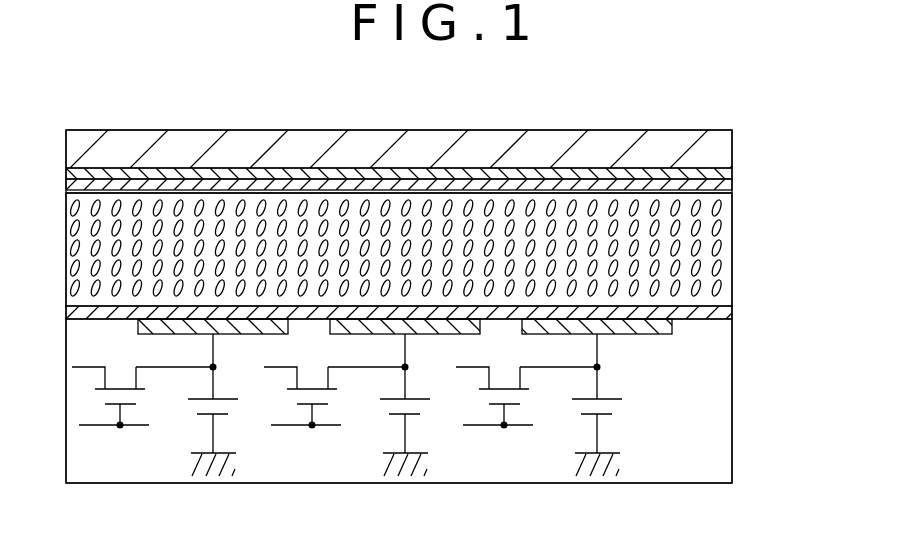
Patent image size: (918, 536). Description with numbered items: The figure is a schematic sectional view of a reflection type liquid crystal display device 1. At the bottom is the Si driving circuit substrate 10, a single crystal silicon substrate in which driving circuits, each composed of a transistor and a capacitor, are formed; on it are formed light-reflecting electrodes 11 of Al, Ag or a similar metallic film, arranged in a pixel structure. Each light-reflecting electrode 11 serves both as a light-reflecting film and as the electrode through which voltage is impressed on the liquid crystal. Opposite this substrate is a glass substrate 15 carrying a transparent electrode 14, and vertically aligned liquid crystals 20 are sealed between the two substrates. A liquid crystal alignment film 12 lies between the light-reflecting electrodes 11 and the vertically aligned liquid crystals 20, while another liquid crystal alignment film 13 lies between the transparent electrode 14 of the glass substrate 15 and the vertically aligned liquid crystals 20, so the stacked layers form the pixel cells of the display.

The liquid crystal display device 1 is at (189, 127).
The Si driving circuit substrate 10 is at (720, 397).
The light-reflecting electrode 11 is at (665, 325).
The liquid crystal alignment film 12 is at (720, 312).
The liquid crystal alignment film 13 is at (720, 186).
The transparent electrode 14 is at (720, 176).
The glass substrate 15 is at (720, 148).
The vertically aligned liquid crystals 20 is at (720, 247).